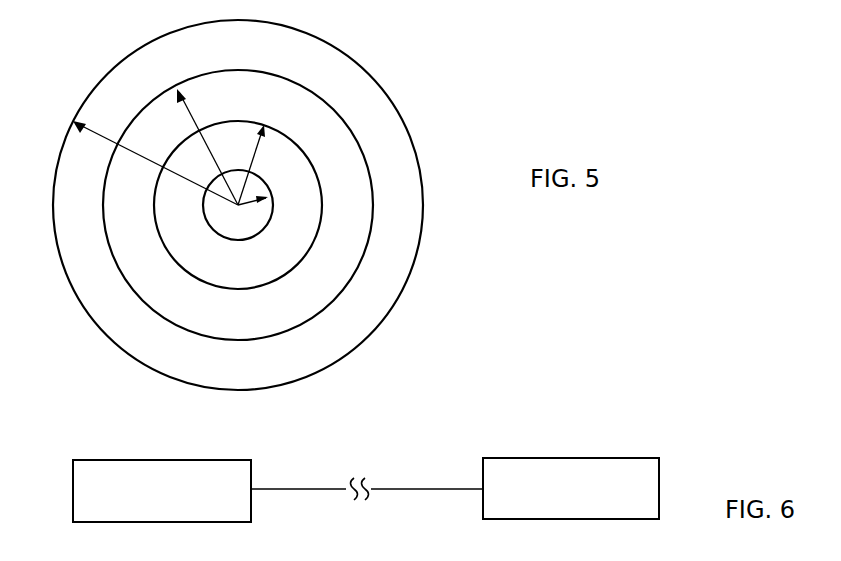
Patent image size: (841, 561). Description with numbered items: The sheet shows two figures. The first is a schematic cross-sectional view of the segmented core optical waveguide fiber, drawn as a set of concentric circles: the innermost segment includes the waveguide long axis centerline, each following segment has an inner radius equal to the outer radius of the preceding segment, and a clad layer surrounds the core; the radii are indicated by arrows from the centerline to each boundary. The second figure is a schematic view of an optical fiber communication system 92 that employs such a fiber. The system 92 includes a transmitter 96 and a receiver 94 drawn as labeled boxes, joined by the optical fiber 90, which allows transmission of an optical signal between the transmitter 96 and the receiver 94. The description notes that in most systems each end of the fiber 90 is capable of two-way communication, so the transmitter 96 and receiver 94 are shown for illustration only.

The optical fiber 90 is at (295, 489).
The optical fiber communication system 92 is at (494, 414).
The receiver 94 is at (650, 458).
The transmitter 96 is at (86, 461).